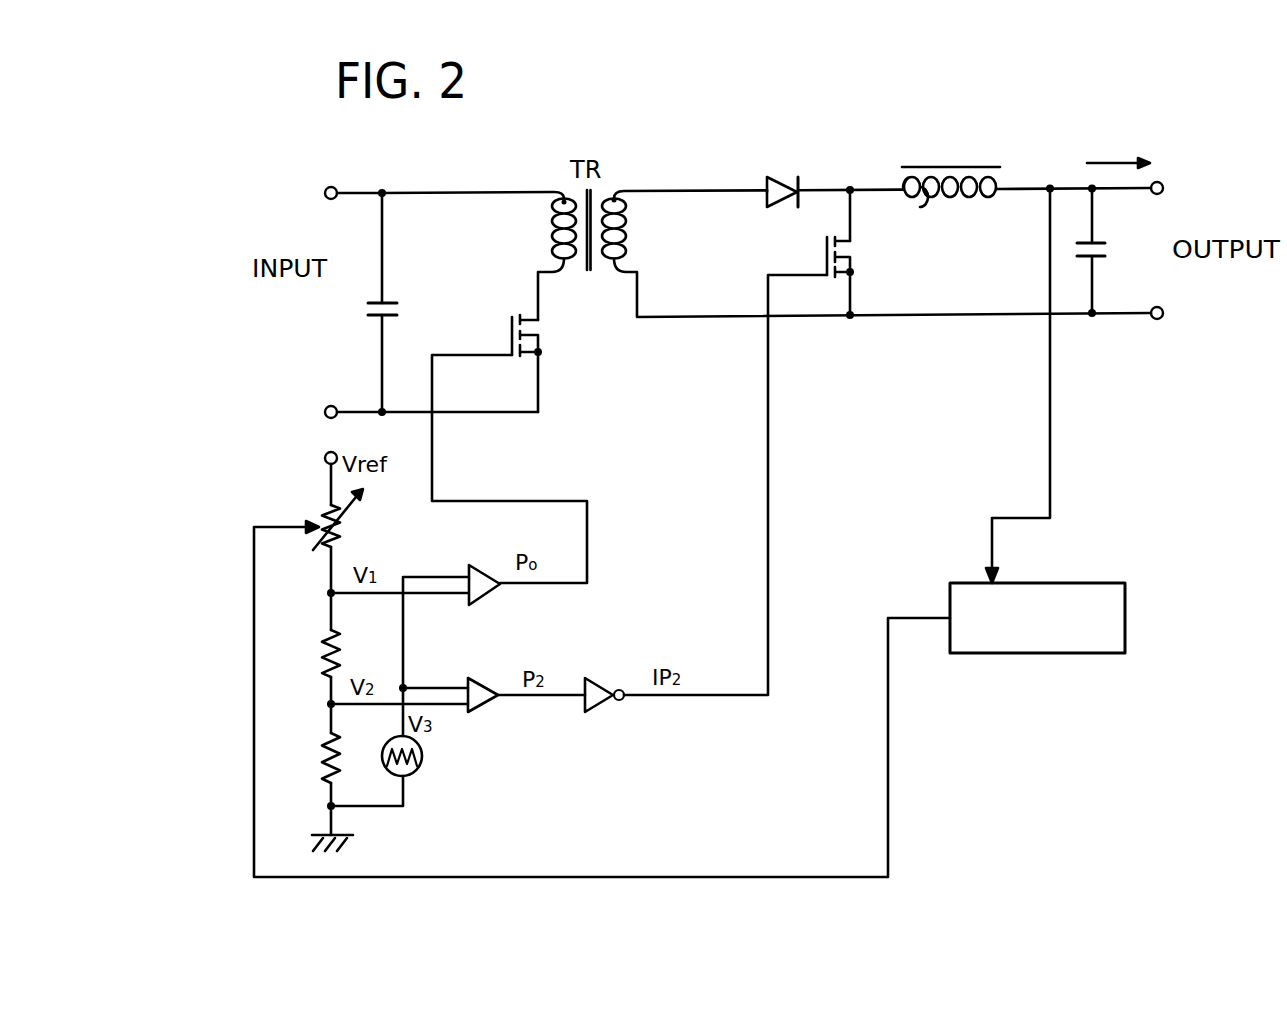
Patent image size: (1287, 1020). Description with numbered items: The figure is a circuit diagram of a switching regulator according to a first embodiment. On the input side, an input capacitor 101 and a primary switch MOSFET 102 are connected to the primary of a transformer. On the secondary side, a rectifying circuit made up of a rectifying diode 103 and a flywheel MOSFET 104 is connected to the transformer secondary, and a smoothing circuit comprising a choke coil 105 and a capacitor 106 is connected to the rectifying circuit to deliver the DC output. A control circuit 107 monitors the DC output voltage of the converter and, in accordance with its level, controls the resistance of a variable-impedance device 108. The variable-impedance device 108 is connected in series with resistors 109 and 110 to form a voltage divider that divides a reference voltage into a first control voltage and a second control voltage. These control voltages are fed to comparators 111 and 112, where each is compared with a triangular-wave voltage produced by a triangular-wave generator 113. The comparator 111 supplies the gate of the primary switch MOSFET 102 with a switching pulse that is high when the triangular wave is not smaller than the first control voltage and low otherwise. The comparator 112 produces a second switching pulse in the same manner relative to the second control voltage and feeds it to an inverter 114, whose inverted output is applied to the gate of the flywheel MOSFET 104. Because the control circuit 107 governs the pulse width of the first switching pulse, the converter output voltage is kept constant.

The input capacitor 101 is at (396, 303).
The primary switch MOSFET 102 is at (540, 328).
The rectifying diode 103 is at (788, 177).
The flywheel MOSFET 104 is at (852, 248).
The choke coil 105 is at (963, 198).
The capacitor 106 is at (1100, 257).
The control circuit 107 is at (952, 582).
The variable-impedance device 108 is at (327, 550).
The resistor 109 is at (323, 660).
The resistor 110 is at (328, 765).
The comparator 111 is at (487, 595).
The comparator 112 is at (488, 708).
The triangular-wave generator 113 is at (423, 758).
The inverter 114 is at (600, 705).